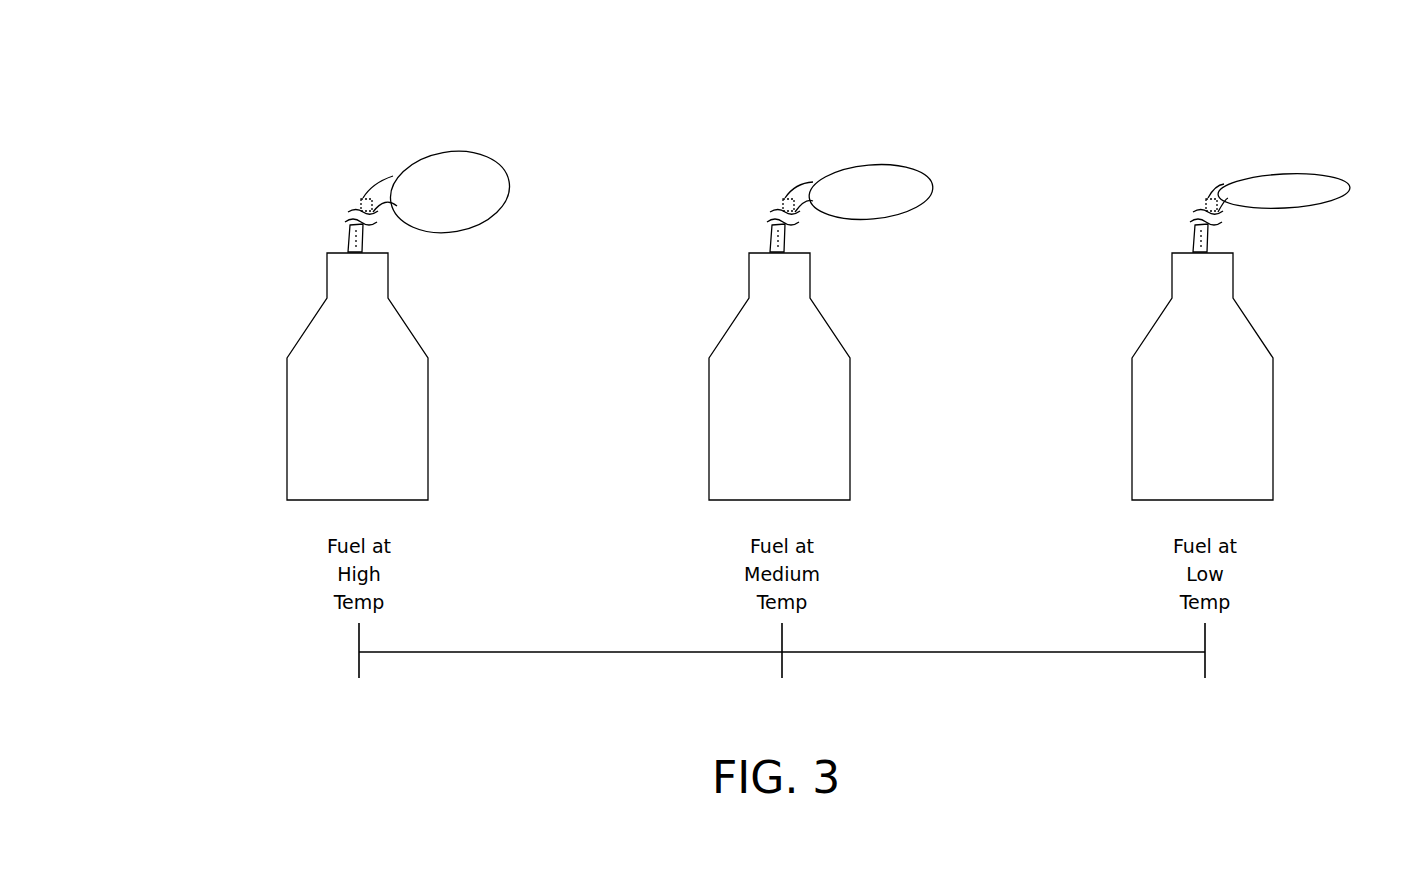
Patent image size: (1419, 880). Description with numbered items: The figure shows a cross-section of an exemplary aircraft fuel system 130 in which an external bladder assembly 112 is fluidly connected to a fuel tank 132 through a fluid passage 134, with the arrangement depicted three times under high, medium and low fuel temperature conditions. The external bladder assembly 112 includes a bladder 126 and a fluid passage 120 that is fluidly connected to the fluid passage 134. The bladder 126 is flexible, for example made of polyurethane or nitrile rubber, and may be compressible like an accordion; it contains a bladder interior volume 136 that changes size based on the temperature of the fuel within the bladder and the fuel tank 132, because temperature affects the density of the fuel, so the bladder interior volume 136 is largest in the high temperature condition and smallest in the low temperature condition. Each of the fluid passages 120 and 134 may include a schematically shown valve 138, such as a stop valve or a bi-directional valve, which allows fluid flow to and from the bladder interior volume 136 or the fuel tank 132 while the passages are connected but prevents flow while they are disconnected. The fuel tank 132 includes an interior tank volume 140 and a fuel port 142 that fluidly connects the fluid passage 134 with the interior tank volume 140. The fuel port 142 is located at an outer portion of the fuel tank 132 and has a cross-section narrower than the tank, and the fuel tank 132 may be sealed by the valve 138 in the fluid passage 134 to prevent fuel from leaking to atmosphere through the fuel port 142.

The fuel system 130 is at (257, 157).
The external bladder assembly 112 is at (337, 197).
The fluid passage 120 is at (367, 190).
The bladder 126 is at (447, 152).
The bladder interior volume 136 is at (453, 208).
The valve 138 is at (360, 202).
The fluid passage 134 is at (347, 240).
The fuel port 142 is at (347, 252).
The fuel tank 132 is at (310, 320).
The interior tank volume 140 is at (313, 403).